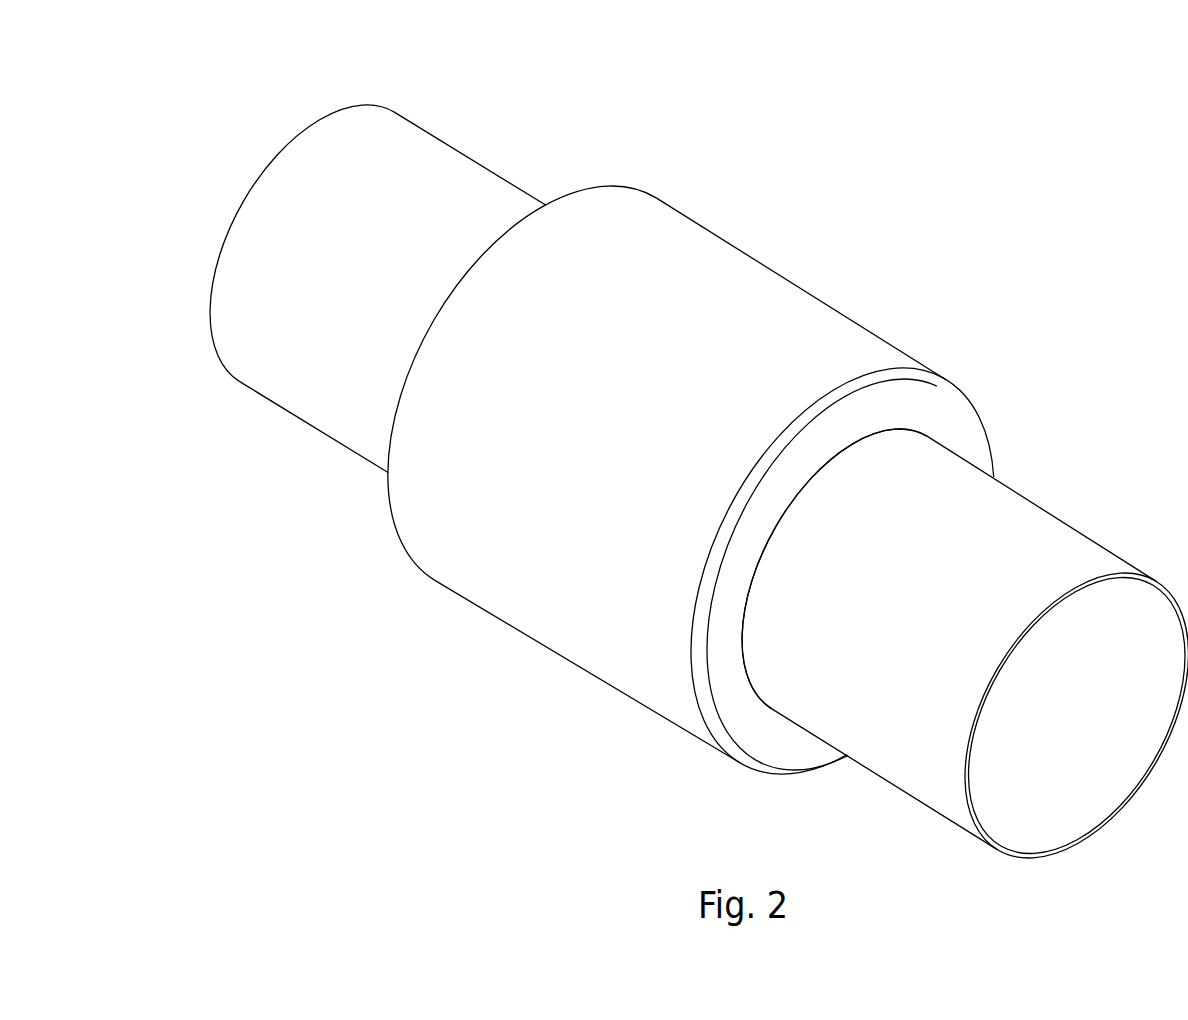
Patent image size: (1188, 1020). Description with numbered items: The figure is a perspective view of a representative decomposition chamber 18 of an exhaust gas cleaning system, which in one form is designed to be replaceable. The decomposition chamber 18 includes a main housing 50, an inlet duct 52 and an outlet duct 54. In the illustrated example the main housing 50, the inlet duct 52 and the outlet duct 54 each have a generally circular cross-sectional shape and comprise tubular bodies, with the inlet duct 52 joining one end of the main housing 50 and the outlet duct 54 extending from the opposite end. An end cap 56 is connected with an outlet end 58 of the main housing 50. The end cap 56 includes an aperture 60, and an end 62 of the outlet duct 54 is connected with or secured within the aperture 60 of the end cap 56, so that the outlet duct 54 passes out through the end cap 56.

The decomposition chamber 18 is at (793, 112).
The main housing 50 is at (825, 292).
The inlet duct 52 is at (481, 157).
The outlet duct 54 is at (1077, 525).
The end cap 56 is at (947, 395).
The outlet end 58 is at (890, 366).
The aperture 60 is at (903, 429).
The end 62 is at (773, 667).